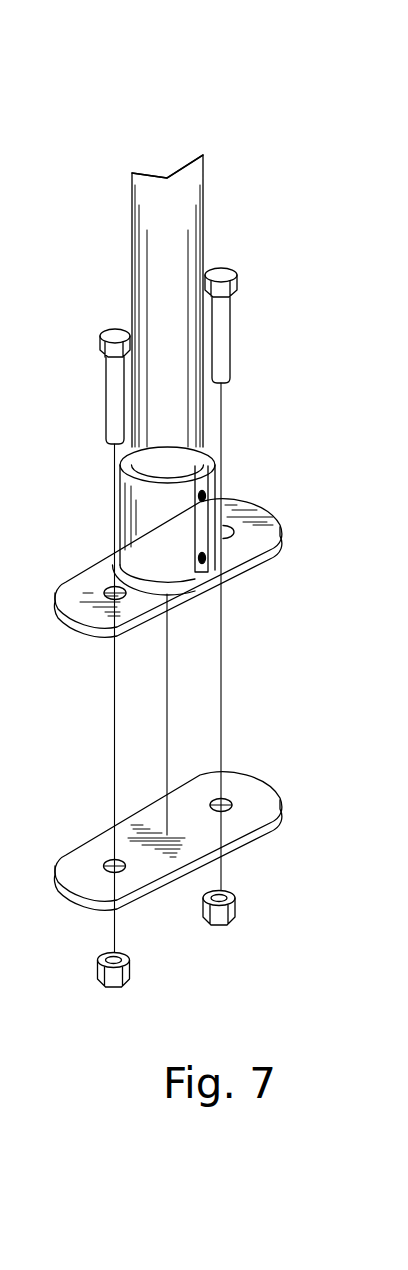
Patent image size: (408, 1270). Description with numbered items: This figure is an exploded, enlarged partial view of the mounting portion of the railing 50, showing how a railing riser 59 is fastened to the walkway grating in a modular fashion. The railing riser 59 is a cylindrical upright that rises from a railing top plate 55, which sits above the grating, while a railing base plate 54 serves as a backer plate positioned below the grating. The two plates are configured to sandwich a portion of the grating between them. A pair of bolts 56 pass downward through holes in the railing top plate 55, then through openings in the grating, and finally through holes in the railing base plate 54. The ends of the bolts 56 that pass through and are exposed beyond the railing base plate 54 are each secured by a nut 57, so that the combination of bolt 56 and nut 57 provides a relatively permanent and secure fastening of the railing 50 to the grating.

The railing 50 is at (132, 249).
The railing riser 59 is at (195, 170).
The bolt 56 is at (234, 285).
The railing top plate 55 is at (270, 551).
The railing base plate 54 is at (263, 802).
The nut 57 is at (235, 908).